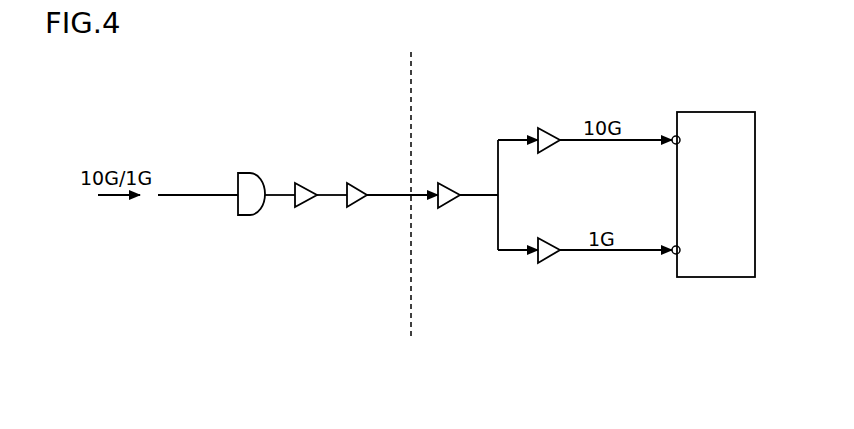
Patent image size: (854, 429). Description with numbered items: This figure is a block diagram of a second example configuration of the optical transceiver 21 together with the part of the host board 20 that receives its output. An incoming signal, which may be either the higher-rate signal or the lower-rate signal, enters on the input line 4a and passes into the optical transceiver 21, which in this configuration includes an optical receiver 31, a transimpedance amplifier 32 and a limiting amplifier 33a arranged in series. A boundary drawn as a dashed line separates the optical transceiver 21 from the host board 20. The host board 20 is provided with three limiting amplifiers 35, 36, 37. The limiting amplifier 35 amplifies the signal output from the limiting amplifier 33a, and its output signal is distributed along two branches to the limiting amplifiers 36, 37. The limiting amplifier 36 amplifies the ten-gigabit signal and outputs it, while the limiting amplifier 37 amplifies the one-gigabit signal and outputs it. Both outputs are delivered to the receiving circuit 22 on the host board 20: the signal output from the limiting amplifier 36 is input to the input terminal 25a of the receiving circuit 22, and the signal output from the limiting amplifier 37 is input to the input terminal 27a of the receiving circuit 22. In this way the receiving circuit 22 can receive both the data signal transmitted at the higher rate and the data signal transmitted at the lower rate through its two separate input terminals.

The input signal line 4a is at (187, 197).
The host board 20 is at (496, 76).
The optical transceiver 21 is at (345, 76).
The receiving circuit 22 is at (716, 112).
The input terminal 25a is at (673, 137).
The input terminal 27a is at (673, 254).
The optical receiver 31 is at (253, 173).
The transimpedance amplifier 32 is at (307, 183).
The limiting amplifier 33a is at (357, 183).
The limiting amplifier 35 is at (451, 183).
The limiting amplifier 36 is at (548, 128).
The limiting amplifier 37 is at (548, 238).